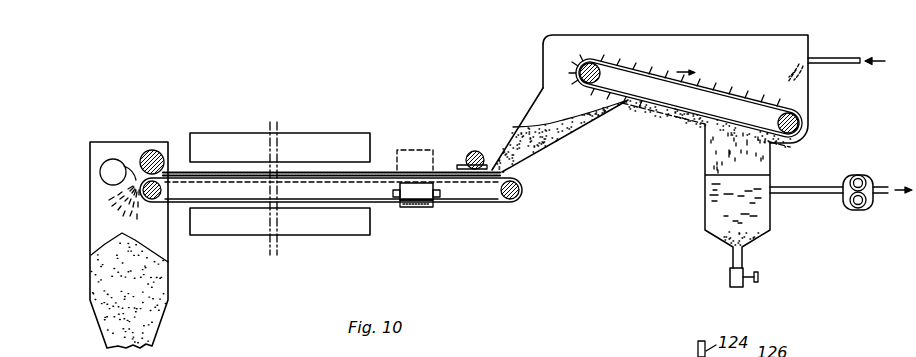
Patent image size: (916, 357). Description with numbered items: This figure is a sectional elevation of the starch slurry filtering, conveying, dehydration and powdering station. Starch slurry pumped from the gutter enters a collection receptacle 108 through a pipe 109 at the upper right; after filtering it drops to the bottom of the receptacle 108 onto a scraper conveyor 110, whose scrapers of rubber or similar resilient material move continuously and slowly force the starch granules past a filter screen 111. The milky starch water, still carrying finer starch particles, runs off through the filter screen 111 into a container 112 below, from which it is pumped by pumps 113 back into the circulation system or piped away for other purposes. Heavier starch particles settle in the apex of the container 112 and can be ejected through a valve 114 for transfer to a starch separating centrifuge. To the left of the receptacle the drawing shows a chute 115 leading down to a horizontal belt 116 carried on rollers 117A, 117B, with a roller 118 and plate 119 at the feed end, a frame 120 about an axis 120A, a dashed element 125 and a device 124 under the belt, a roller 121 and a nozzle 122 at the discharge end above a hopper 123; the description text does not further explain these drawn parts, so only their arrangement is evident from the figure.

The collection receptacle 108 is at (688, 43).
The pipe 109 is at (837, 58).
The scraper conveyor 110 is at (750, 98).
The filter screen 111 is at (713, 132).
The container 112 is at (760, 227).
The pump 113 is at (868, 180).
The valve 114 is at (752, 277).
The chute 115 is at (540, 97).
The horizontal conveyor belt 116 is at (484, 203).
The belt roller 117A is at (521, 191).
The belt roller 117B is at (163, 200).
The feed roller 118 is at (478, 151).
The guide plate 119 is at (456, 164).
The press frame 120 is at (345, 133).
The press axis 120A is at (272, 122).
The discharge roller 121 is at (152, 149).
The spray nozzle 122 is at (113, 167).
The collecting hopper 123 is at (153, 329).
The belt cleaning device 124 is at (422, 207).
The press element 125 is at (412, 150).